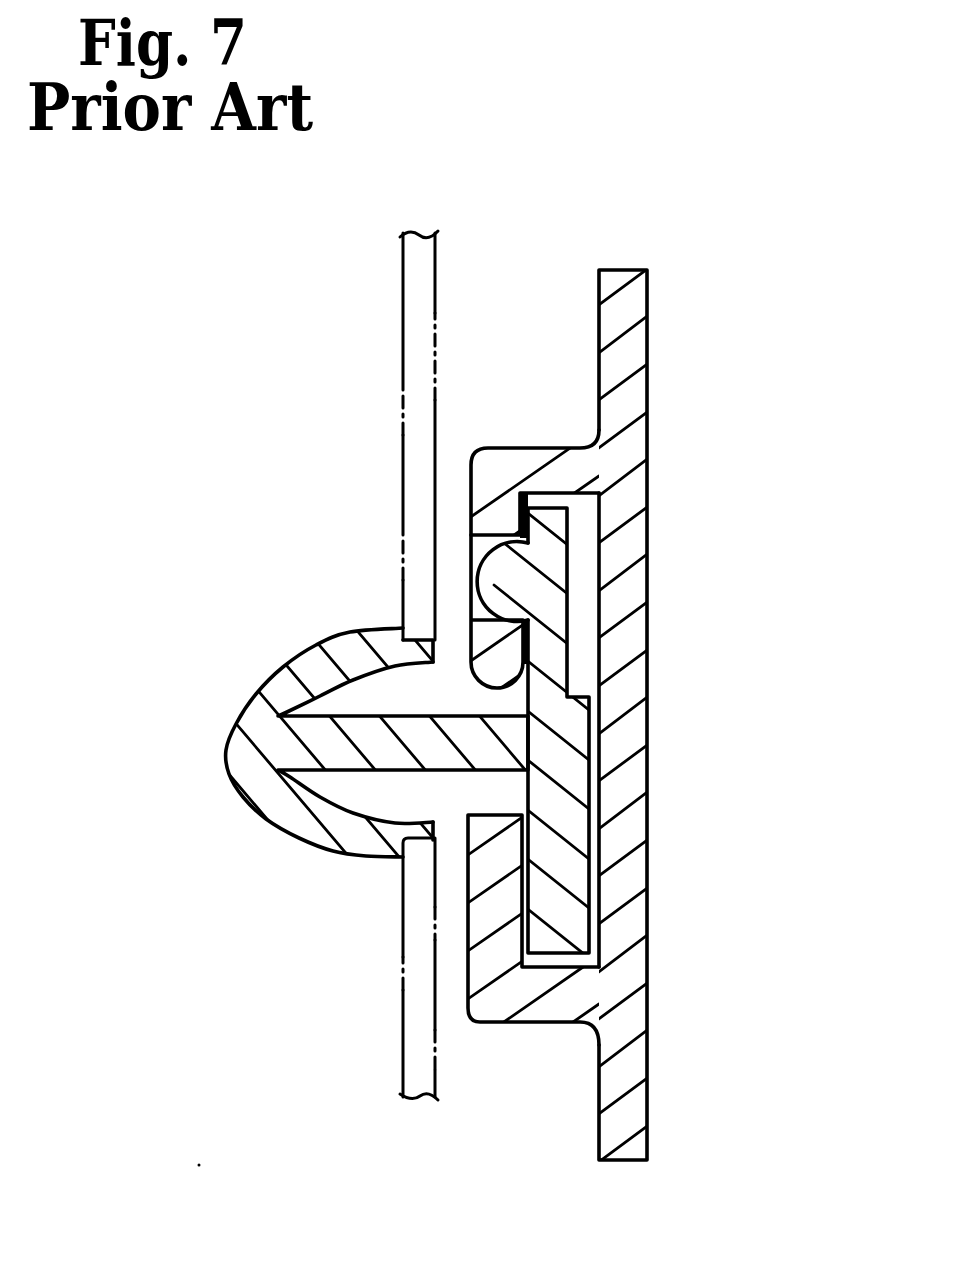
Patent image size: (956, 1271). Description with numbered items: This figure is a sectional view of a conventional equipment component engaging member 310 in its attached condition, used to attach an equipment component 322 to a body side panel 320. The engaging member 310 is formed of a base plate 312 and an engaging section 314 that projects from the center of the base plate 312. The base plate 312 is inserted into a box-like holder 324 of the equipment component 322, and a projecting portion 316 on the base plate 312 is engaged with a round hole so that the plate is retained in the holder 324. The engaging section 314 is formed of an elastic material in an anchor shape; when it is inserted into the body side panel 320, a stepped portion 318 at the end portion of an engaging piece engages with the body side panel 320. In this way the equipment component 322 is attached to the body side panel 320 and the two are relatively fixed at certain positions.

The equipment component engaging member 310 is at (264, 812).
The base plate 312 is at (573, 828).
The engaging section 314 is at (243, 745).
The projecting portion 316 is at (500, 578).
The stepped portion 318 is at (402, 618).
The body side panel 320 is at (400, 316).
The equipment component 322 is at (640, 343).
The box-like holder 324 is at (470, 497).